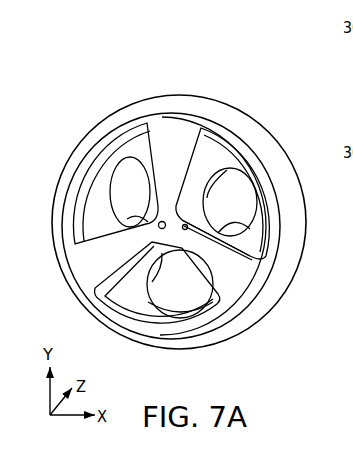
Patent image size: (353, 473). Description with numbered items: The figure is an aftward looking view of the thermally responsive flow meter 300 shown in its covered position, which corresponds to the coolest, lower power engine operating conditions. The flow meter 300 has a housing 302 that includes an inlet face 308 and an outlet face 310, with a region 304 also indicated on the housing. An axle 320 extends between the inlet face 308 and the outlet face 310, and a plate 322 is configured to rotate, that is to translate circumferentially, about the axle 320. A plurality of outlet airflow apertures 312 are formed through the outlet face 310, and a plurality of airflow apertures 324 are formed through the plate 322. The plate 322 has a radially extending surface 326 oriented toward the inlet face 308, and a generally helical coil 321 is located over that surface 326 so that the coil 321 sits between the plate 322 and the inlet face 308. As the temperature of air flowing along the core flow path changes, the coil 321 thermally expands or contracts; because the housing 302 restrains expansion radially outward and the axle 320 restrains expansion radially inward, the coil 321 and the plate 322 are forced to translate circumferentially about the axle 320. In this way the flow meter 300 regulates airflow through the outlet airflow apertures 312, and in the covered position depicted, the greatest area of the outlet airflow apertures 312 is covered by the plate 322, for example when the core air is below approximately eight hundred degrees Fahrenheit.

The thermally responsive flow meter 300 is at (68, 76).
The housing 302 is at (217, 110).
The top surface 304 is at (174, 50).
The inlet face 308 is at (98, 264).
The outlet face 310 is at (144, 198).
The outlet airflow apertures 312 is at (241, 238).
The axle 320 is at (163, 221).
The coil 321 is at (118, 143).
The plate 322 is at (128, 292).
The airflow apertures 324 is at (258, 213).
The radially extending surface 326 is at (212, 164).